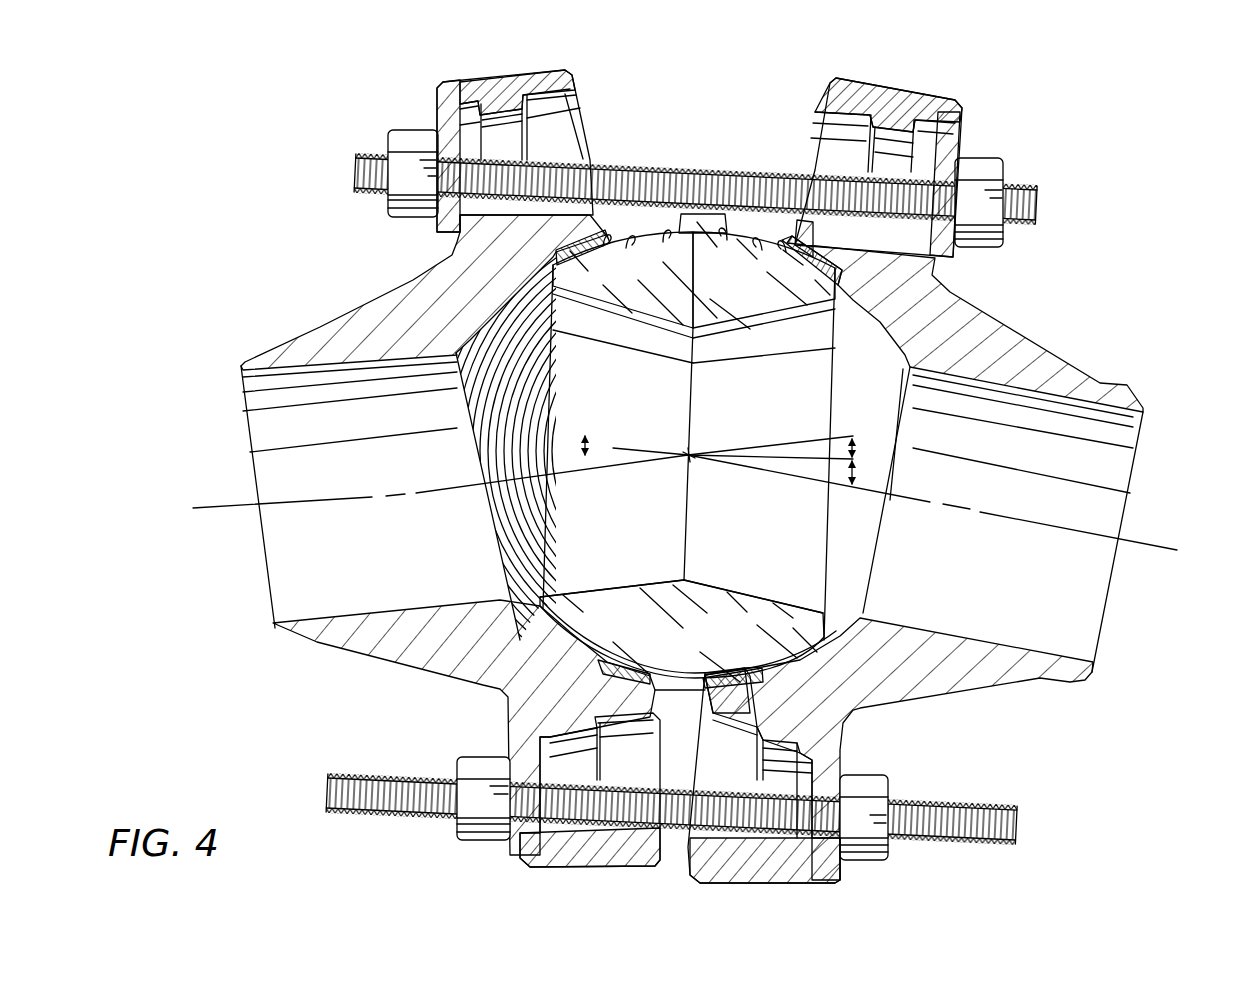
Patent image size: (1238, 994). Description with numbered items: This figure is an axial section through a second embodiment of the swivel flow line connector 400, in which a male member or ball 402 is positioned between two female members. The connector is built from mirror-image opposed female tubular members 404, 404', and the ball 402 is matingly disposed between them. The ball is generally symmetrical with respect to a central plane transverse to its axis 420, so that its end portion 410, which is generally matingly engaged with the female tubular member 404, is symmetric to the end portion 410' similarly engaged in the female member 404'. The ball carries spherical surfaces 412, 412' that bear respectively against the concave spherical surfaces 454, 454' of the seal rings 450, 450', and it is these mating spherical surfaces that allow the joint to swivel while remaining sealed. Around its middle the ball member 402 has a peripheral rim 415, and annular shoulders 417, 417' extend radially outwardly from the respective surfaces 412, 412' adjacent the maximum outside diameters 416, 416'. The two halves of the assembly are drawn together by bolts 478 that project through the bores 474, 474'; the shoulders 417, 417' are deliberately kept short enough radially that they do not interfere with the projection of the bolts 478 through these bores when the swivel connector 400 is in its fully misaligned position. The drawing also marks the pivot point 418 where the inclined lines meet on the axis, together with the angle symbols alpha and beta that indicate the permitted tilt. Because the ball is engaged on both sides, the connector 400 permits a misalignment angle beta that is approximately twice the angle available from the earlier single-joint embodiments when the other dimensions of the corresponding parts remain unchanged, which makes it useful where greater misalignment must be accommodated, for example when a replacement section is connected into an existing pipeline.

The swivel flow line connector 400 is at (276, 97).
The male member or ball 402 is at (695, 652).
The female tubular member 404 is at (356, 496).
The female tubular member 404' is at (1017, 519).
The end portion 410 is at (616, 420).
The end portion 410' is at (759, 436).
The spherical surface 412 is at (595, 258).
The spherical surface 412' is at (799, 261).
The peripheral rim 415 is at (702, 220).
The maximum outside diameter 416 is at (669, 252).
The maximum outside diameter 416' is at (729, 251).
The annular shoulder 417 is at (633, 186).
The annular shoulder 417' is at (758, 188).
The pivot point 418 is at (694, 462).
The axis 420 is at (778, 452).
The seal ring 450 is at (590, 769).
The seal ring 450' is at (764, 762).
The concave spherical surface 454 is at (620, 646).
The concave spherical surface 454' is at (733, 649).
The bore 474 is at (506, 133).
The bore 474' is at (898, 157).
The bolt 478 is at (1040, 205).